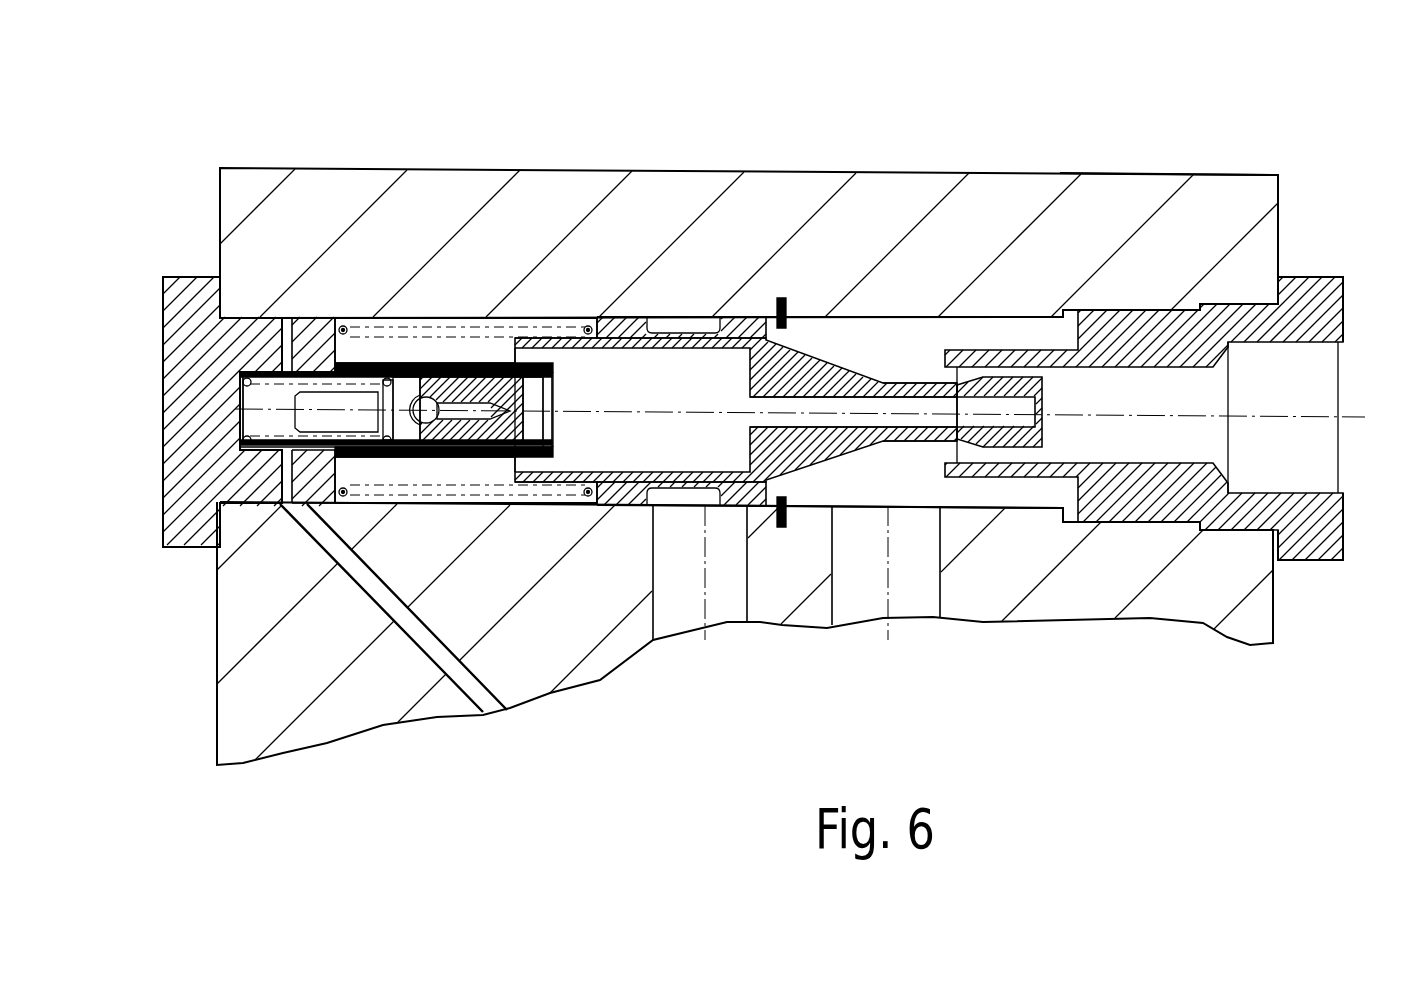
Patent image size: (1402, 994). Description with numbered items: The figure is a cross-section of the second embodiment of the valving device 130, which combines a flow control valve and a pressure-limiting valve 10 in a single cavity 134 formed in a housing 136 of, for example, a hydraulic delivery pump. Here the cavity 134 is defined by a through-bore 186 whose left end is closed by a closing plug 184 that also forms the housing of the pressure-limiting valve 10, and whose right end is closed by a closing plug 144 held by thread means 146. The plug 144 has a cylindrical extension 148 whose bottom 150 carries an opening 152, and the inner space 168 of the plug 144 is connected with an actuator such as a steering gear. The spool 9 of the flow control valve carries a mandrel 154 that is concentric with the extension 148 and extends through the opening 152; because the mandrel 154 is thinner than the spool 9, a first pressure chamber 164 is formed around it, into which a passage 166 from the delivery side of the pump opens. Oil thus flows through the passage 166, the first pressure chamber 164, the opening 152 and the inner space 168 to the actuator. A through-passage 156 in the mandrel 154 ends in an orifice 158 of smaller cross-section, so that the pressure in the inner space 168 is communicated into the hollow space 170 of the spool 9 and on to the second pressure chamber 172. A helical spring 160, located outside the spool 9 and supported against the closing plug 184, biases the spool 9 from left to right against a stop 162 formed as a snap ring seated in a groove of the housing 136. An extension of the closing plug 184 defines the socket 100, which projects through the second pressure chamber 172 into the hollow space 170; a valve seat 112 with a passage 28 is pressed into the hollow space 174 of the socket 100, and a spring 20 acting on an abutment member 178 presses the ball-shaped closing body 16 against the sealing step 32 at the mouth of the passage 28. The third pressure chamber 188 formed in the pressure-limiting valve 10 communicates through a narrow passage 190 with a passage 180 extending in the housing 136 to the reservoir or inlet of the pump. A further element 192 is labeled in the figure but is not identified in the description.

The spool 9 is at (596, 315).
The pressure-limiting valve 10 is at (247, 300).
The closing body 16 is at (462, 452).
The spring 20 is at (243, 378).
The passage 28 is at (493, 452).
The sealing step 32 is at (447, 452).
The socket 100 is at (483, 372).
The valve seat 112 is at (447, 372).
The valving device 130 is at (637, 302).
The cavity 134 is at (457, 300).
The housing 136 is at (1103, 210).
The closing plug 144 is at (1312, 533).
The thread means 146 is at (1132, 310).
The extension 148 is at (982, 348).
The bottom 150 is at (933, 473).
The opening 152 is at (933, 380).
The mandrel 154 is at (852, 372).
The through-passage 156 is at (800, 397).
The orifice 158 is at (1040, 413).
The helical spring 160 is at (346, 494).
The stop 162 is at (773, 300).
The first pressure chamber 164 is at (833, 480).
The passage 166 is at (907, 588).
The inner space 168 is at (1100, 409).
The hollow space 170 is at (650, 395).
The second pressure chamber 172 is at (372, 363).
The hollow space 174 is at (533, 425).
The abutment member 178 is at (240, 411).
The passage 180 is at (410, 625).
The closing plug 184 is at (188, 520).
The through-bore 186 is at (355, 320).
The third pressure chamber 188 is at (254, 408).
The narrow passage 190 is at (285, 458).
The seal ring 192 is at (580, 322).